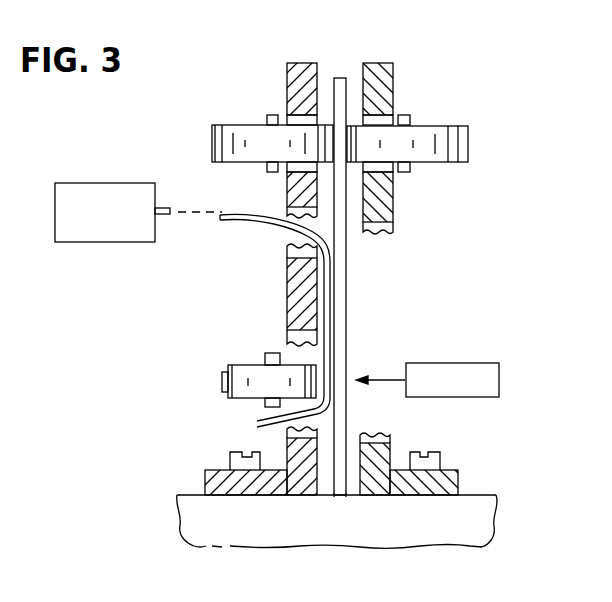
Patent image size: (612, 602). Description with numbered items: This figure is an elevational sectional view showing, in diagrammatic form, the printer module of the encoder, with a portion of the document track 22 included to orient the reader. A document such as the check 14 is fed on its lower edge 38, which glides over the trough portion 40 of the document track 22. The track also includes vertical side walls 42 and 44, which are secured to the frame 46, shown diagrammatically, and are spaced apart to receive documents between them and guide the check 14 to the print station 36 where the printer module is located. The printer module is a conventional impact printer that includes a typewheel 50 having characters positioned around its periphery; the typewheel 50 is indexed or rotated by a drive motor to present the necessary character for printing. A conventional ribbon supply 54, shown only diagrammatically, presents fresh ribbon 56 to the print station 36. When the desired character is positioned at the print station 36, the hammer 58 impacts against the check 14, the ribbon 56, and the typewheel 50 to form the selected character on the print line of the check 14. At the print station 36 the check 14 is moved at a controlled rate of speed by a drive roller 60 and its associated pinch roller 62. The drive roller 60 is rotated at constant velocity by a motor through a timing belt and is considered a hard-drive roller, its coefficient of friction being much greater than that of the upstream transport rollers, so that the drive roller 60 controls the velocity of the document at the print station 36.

The check 14 is at (341, 77).
The document track 22 is at (404, 52).
The print station 36 is at (227, 415).
The lower edge 38 is at (338, 496).
The trough portion 40 is at (316, 490).
The vertical side wall 42 is at (302, 64).
The vertical side wall 44 is at (395, 92).
The frame 46 is at (480, 527).
The typewheel 50 is at (262, 370).
The ribbon supply 54 is at (80, 242).
The ribbon 56 is at (280, 230).
The hammer 58 is at (428, 363).
The drive roller 60 is at (455, 140).
The pinch roller 62 is at (220, 132).